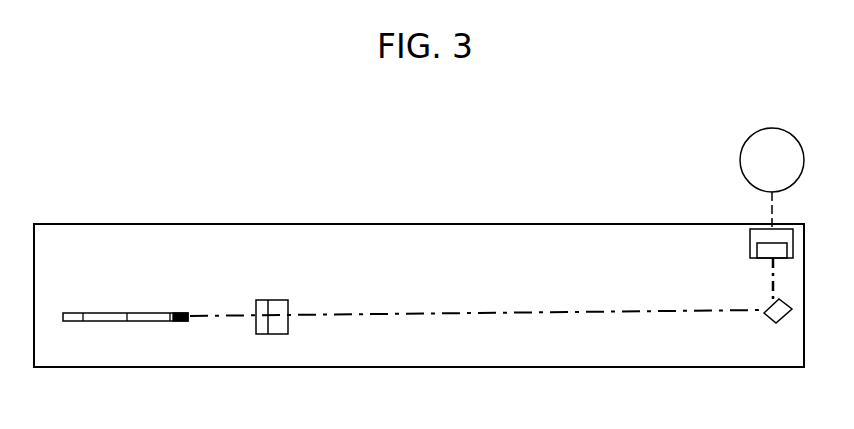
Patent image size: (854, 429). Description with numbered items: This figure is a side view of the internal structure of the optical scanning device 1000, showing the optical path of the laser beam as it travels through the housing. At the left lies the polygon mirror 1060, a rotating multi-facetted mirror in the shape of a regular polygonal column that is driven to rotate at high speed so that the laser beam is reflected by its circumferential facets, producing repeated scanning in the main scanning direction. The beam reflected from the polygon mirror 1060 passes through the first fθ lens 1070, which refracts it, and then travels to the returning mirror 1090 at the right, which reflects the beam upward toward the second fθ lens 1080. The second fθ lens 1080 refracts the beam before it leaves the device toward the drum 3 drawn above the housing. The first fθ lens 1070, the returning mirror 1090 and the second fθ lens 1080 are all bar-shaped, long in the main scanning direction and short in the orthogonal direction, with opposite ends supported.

The optical scanning device 1000 is at (460, 164).
The polygon mirror 1060 is at (106, 321).
The first fθ lens 1070 is at (278, 308).
The second fθ lens 1080 is at (763, 243).
The returning mirror 1090 is at (766, 315).
The photosensitive drum 3 is at (762, 128).